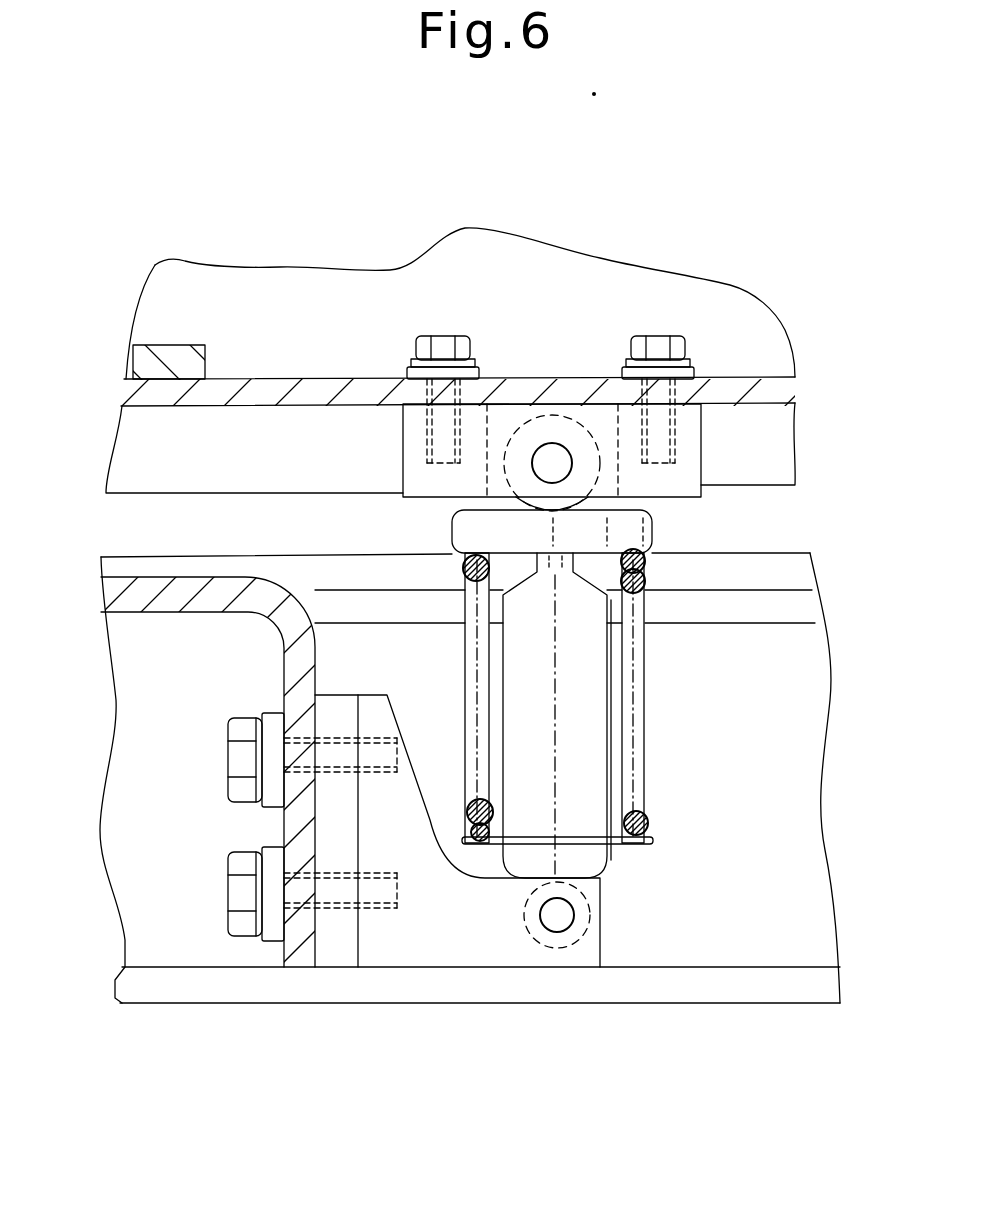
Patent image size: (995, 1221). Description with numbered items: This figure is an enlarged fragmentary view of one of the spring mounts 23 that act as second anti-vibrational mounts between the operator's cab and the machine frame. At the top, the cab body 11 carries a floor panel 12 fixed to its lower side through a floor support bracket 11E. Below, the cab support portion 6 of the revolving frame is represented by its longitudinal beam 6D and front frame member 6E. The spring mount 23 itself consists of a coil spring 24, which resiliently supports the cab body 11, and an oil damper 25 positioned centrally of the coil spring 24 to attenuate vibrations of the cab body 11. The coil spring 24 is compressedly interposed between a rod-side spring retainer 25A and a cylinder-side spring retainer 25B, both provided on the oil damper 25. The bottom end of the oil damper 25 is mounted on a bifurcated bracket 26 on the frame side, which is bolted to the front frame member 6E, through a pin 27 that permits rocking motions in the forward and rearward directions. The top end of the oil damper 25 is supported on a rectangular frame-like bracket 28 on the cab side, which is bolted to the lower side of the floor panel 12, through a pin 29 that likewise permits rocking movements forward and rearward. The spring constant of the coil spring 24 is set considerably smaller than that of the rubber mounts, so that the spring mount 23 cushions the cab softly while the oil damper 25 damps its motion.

The cab support portion 6 is at (257, 1012).
The longitudinal beam 6D is at (805, 606).
The front frame member 6E is at (130, 605).
The cab body 11 is at (667, 262).
The floor support bracket 11E is at (178, 352).
The floor panel 12 is at (733, 380).
The spring mount 23 is at (662, 672).
The coil spring 24 is at (648, 834).
The oil damper 25 is at (580, 715).
The rod-side spring retainer 25A is at (652, 533).
The cylinder-side spring retainer 25B is at (632, 848).
The bifurcated bracket 26 is at (410, 925).
The pin 27 is at (557, 915).
The rectangular frame-like bracket 28 is at (598, 418).
The pin 29 is at (552, 458).